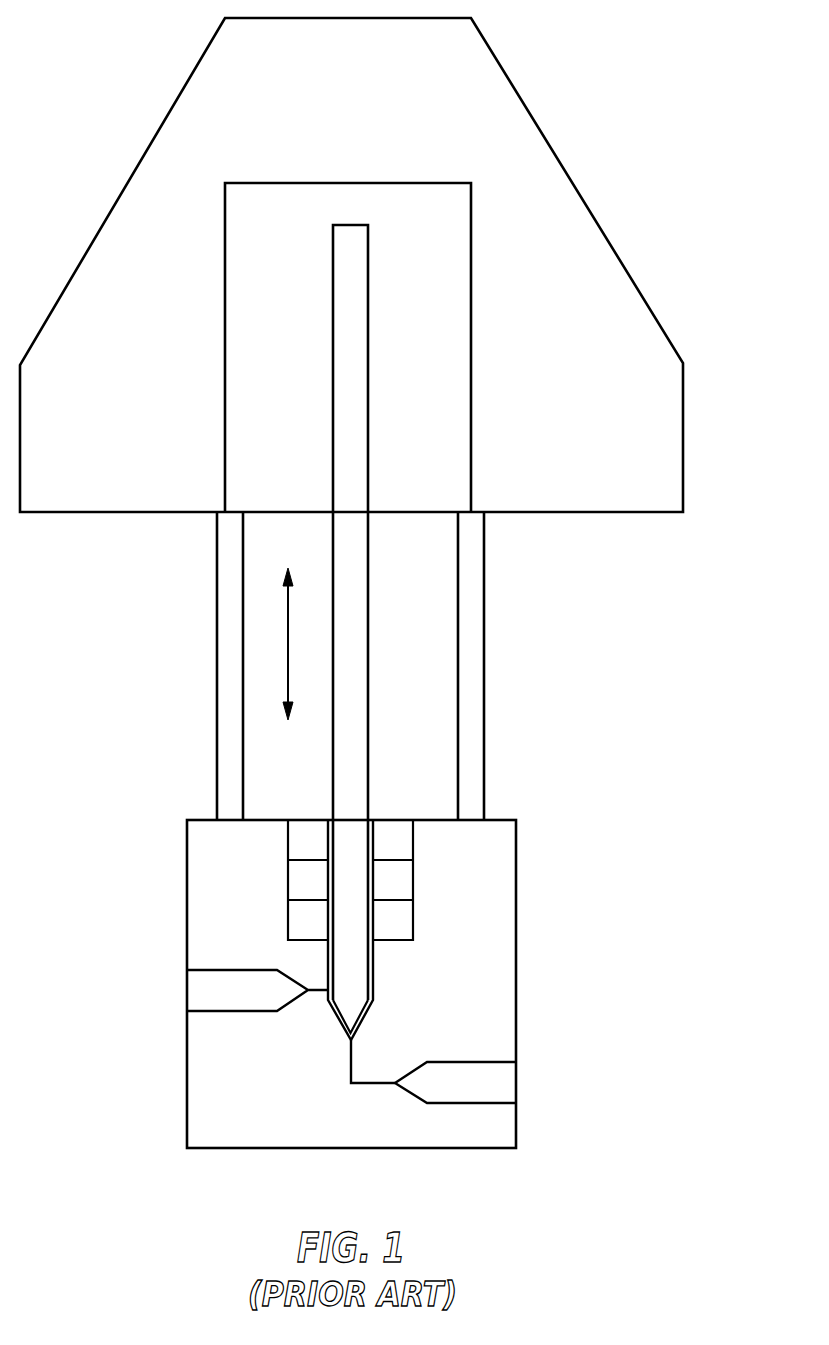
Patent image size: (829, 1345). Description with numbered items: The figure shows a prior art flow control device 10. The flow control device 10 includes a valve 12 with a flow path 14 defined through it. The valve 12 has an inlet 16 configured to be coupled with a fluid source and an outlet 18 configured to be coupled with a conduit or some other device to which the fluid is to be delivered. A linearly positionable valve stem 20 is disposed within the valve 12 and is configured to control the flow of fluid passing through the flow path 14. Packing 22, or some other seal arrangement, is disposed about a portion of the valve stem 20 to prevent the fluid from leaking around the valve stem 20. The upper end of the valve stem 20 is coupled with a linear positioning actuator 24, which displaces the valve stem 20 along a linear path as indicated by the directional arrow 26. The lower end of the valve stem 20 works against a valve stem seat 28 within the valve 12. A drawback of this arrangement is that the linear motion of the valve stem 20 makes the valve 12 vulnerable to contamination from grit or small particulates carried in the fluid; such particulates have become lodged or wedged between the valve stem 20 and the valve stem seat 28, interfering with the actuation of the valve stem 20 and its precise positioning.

The flow control device 10 is at (618, 655).
The valve 12 is at (517, 918).
The flow path 14 is at (377, 1080).
The inlet 16 is at (517, 1075).
The outlet 18 is at (187, 989).
The valve stem 20 is at (368, 763).
The packing 22 is at (413, 874).
The linear positioning actuator 24 is at (147, 513).
The directional arrow 26 is at (288, 636).
The valve stem seat 28 is at (352, 1042).